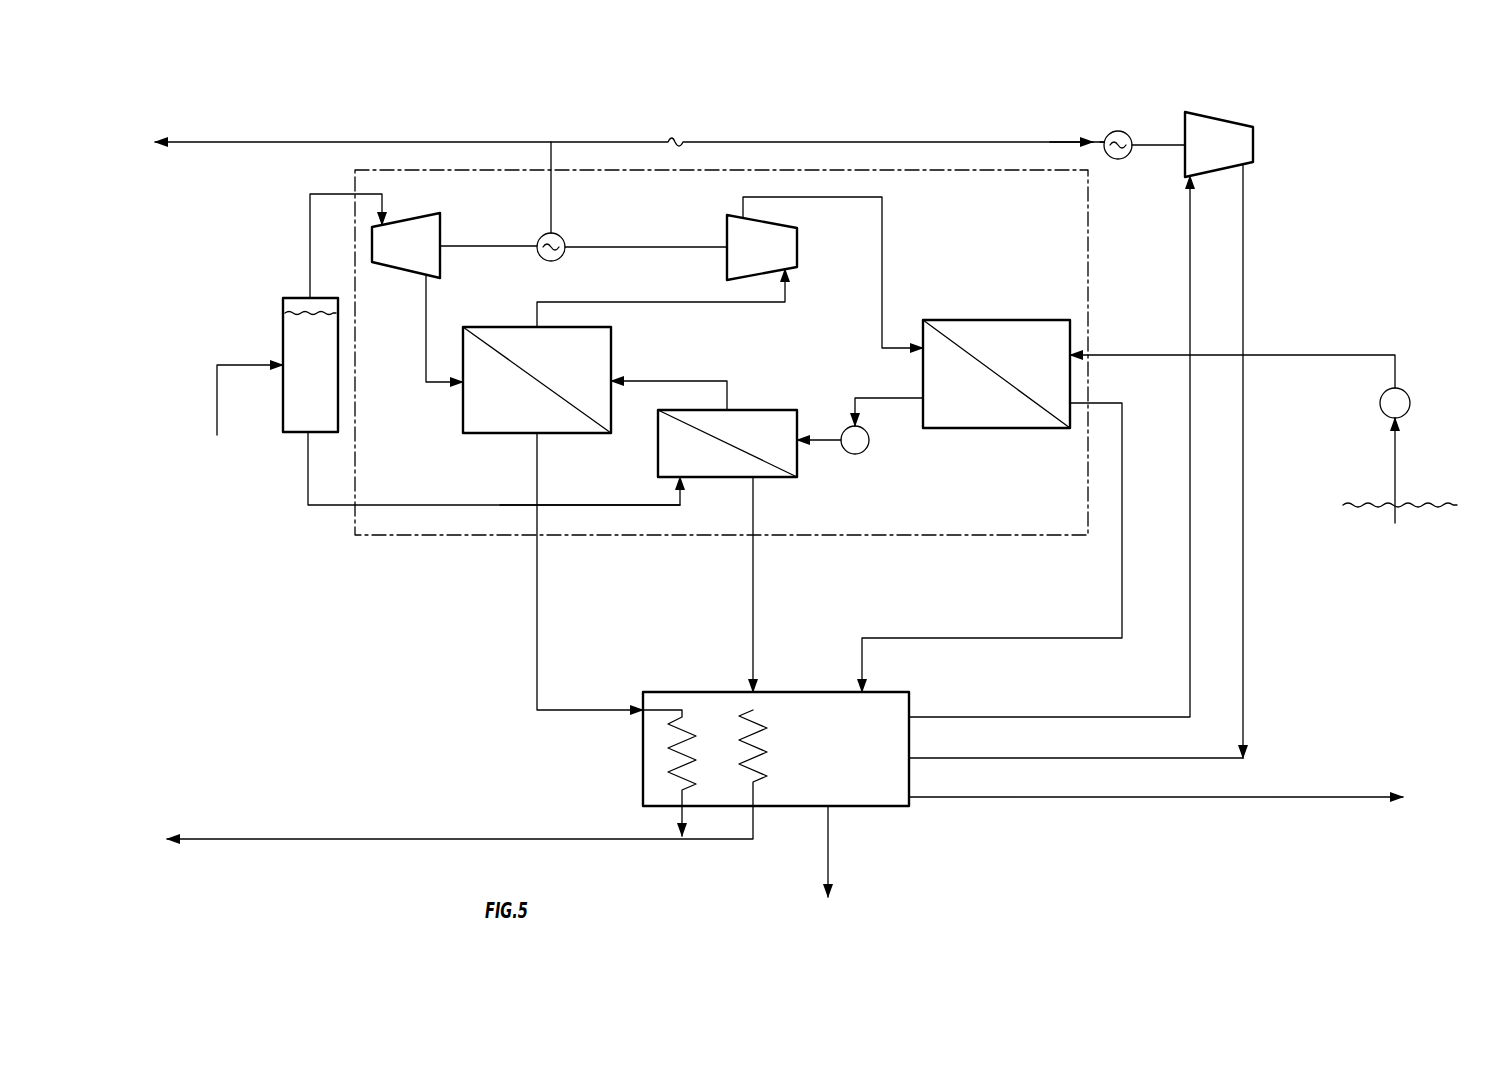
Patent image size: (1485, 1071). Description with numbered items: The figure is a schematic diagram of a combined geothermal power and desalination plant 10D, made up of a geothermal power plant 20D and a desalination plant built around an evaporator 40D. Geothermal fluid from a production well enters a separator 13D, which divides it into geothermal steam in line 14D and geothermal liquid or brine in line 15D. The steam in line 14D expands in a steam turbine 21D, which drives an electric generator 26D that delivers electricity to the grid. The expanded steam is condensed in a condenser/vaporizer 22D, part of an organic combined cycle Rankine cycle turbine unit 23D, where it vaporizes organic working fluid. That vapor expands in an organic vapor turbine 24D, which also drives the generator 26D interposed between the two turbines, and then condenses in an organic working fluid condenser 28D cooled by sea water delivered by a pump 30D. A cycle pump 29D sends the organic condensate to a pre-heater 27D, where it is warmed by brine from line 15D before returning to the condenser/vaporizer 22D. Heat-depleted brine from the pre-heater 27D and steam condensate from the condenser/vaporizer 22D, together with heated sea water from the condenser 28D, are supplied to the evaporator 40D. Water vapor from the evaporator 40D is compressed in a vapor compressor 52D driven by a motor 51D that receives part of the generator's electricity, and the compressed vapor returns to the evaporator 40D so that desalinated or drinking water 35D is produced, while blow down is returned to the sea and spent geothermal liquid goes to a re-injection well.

The combined geothermal power and desalination plant 10D is at (188, 78).
The separator 13D is at (283, 350).
The geothermal steam line 14D is at (310, 255).
The geothermal liquid or brine line 15D is at (308, 506).
The geothermal power plant 20D is at (356, 193).
The steam turbine 21D is at (425, 214).
The condenser/vaporizer 22D is at (470, 327).
The organic combined cycle Rankine cycle turbine unit 23D is at (528, 513).
The organic vapor turbine 24D is at (785, 230).
The electric generator 26D is at (555, 261).
The pre-heater 27D is at (762, 410).
The organic working fluid condenser 28D is at (962, 320).
The cycle pump 29D is at (857, 454).
The pump 30D is at (1385, 413).
The desalinated or drinking water 35D is at (1273, 797).
The desalination plant evaporator 40D is at (900, 692).
The motor 51D is at (1119, 159).
The vapor compressor 52D is at (1250, 126).